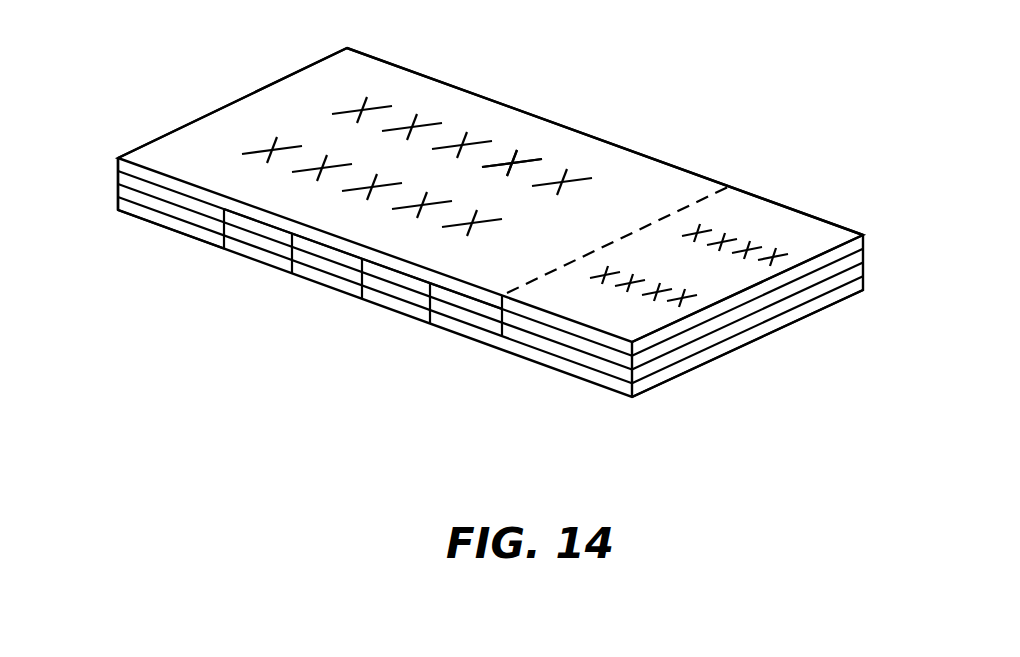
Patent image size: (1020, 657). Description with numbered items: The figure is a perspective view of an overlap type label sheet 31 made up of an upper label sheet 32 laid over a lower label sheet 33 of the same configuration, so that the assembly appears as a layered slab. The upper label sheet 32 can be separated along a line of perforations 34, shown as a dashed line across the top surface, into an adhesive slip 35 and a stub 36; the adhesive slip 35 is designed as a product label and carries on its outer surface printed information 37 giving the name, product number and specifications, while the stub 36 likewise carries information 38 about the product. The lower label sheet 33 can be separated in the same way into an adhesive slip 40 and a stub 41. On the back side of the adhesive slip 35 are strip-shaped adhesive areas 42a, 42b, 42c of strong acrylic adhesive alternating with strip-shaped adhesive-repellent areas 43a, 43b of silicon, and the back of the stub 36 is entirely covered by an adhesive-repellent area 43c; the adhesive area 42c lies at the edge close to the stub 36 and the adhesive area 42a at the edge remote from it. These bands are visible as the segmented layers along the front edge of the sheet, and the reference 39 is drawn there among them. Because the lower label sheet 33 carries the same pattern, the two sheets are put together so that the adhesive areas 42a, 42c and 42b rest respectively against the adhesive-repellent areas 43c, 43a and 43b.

The overlap type label sheet 31 is at (638, 104).
The upper label sheet 32 is at (295, 95).
The lower label sheet 33 is at (132, 217).
The line of perforations 34 is at (708, 198).
The adhesive slip 35 is at (388, 78).
The stub 36 is at (762, 213).
The information 37 is at (525, 165).
The information 38 is at (777, 247).
The divider line 39 is at (222, 248).
The adhesive slip 40 is at (690, 370).
The stub 41 is at (187, 233).
The adhesive area 42a is at (143, 183).
The adhesive area 42b is at (353, 273).
The adhesive area 42c is at (252, 243).
The adhesive-repellent area 43a is at (280, 233).
The adhesive-repellent area 43b is at (327, 262).
The adhesive-repellent area 43c is at (160, 203).